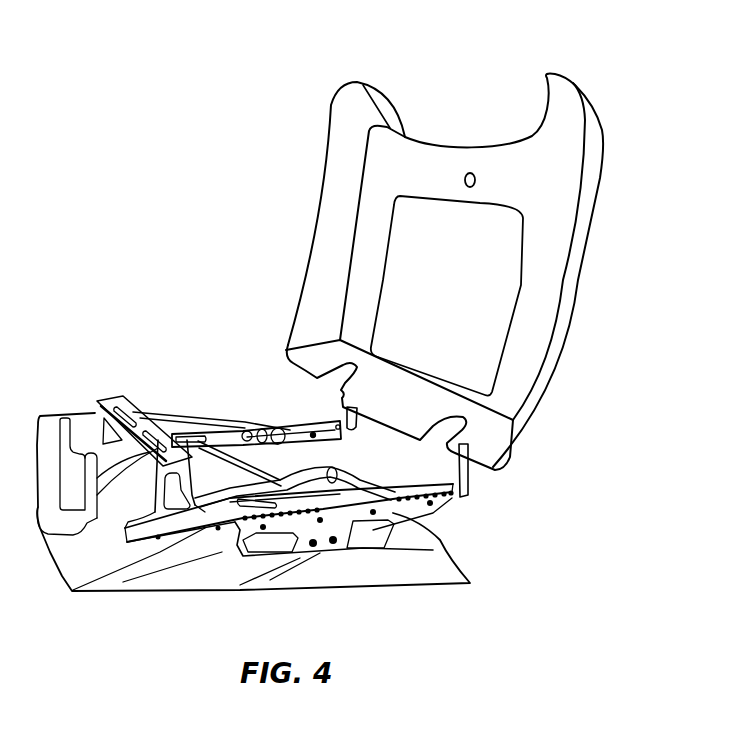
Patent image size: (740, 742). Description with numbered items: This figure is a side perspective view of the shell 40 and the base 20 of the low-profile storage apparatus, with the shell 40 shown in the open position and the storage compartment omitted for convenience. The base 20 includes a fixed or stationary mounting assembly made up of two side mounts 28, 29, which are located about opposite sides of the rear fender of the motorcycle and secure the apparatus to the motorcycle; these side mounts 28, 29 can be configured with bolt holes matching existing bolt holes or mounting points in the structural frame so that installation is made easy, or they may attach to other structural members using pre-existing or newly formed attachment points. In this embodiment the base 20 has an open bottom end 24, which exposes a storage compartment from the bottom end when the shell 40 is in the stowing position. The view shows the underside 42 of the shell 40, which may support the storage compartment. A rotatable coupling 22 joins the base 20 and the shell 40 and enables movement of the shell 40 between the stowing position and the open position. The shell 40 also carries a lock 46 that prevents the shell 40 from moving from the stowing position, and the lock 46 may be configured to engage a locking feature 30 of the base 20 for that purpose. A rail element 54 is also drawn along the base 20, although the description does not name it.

The base 20 is at (413, 515).
The rotatable coupling 22 is at (352, 430).
The open bottom end 24 is at (215, 470).
The side mount 28 is at (345, 518).
The side mount 29 is at (247, 428).
The locking feature 30 is at (140, 417).
The shell 40 is at (595, 143).
The underside 42 is at (403, 268).
The lock 46 is at (475, 178).
The rail 54 is at (340, 421).